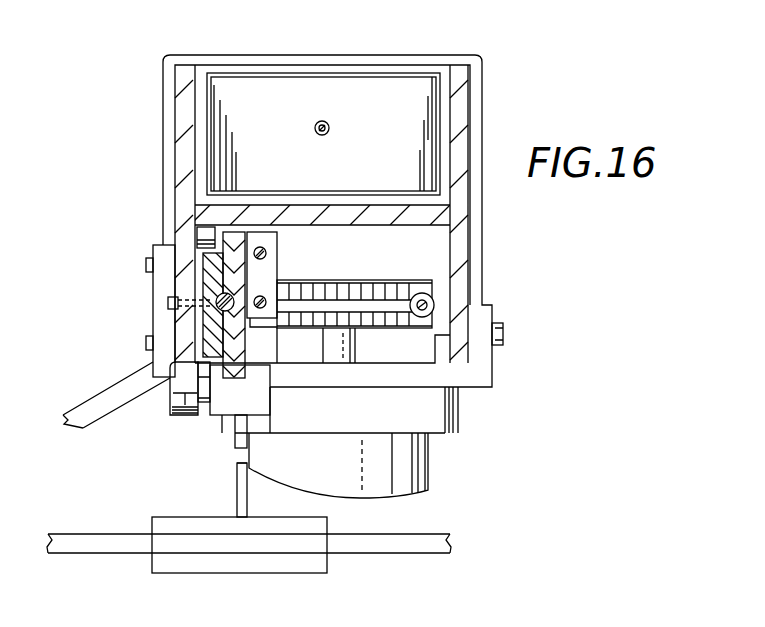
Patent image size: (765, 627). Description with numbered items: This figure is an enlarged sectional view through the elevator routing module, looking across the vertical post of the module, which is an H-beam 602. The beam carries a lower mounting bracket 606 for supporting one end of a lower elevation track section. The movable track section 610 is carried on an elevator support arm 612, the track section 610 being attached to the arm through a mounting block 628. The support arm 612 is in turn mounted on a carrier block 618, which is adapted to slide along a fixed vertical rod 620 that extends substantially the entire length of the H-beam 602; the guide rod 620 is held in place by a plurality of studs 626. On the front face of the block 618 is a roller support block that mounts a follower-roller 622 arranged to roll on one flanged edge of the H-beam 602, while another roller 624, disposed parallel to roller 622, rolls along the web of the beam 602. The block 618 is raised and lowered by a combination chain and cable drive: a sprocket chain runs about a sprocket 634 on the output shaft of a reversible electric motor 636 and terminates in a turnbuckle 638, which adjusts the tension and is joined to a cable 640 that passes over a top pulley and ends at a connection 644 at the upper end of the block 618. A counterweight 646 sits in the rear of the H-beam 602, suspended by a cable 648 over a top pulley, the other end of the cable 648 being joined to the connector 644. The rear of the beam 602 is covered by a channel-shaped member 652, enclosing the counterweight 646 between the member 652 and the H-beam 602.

The H-beam 602 is at (468, 216).
The lower mounting bracket 606 is at (128, 393).
The movable track section 610 is at (432, 538).
The elevator support arm 612 is at (237, 490).
The carrier block 618 is at (207, 285).
The fixed vertical rod 620 is at (220, 297).
The follower-roller 622 is at (176, 392).
The roller 624 is at (200, 240).
The studs 626 is at (168, 303).
The mounting block 628 is at (327, 556).
The sprocket 634 is at (368, 290).
The reversible electric motor 636 is at (405, 472).
The turnbuckle 638 is at (430, 303).
The cable 640 is at (263, 308).
The connection 644 is at (270, 265).
The counterweight 646 is at (413, 78).
The cable 648 is at (321, 121).
The channel-shaped member 652 is at (478, 62).